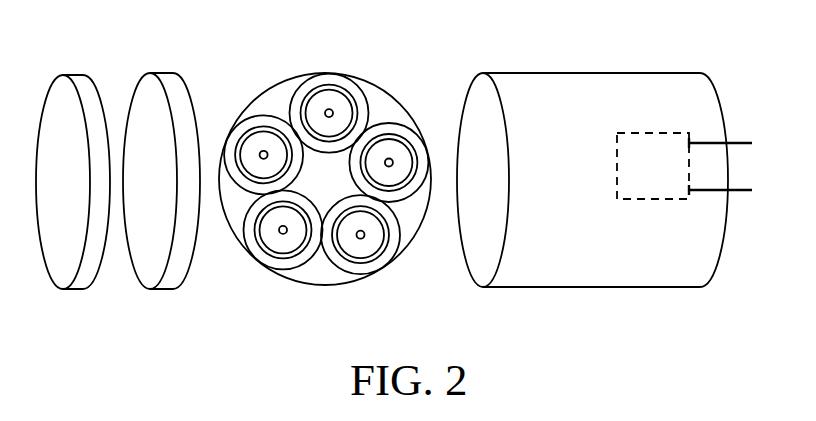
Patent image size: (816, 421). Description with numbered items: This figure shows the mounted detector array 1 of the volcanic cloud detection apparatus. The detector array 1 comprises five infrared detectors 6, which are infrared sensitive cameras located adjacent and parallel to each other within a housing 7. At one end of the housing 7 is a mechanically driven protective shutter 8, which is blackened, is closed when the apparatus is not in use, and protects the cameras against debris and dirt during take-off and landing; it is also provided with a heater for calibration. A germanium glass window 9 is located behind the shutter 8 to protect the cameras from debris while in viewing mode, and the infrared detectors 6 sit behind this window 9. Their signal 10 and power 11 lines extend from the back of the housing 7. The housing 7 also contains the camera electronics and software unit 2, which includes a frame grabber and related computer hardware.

The detector array 1 is at (290, 278).
The camera electronics and software unit 2 is at (653, 182).
The infrared detectors 6 is at (362, 110).
The housing 7 is at (570, 92).
The protective shutter 8 is at (57, 236).
The germanium glass window 9 is at (173, 88).
The signal lines 10 is at (745, 141).
The power lines 11 is at (738, 193).